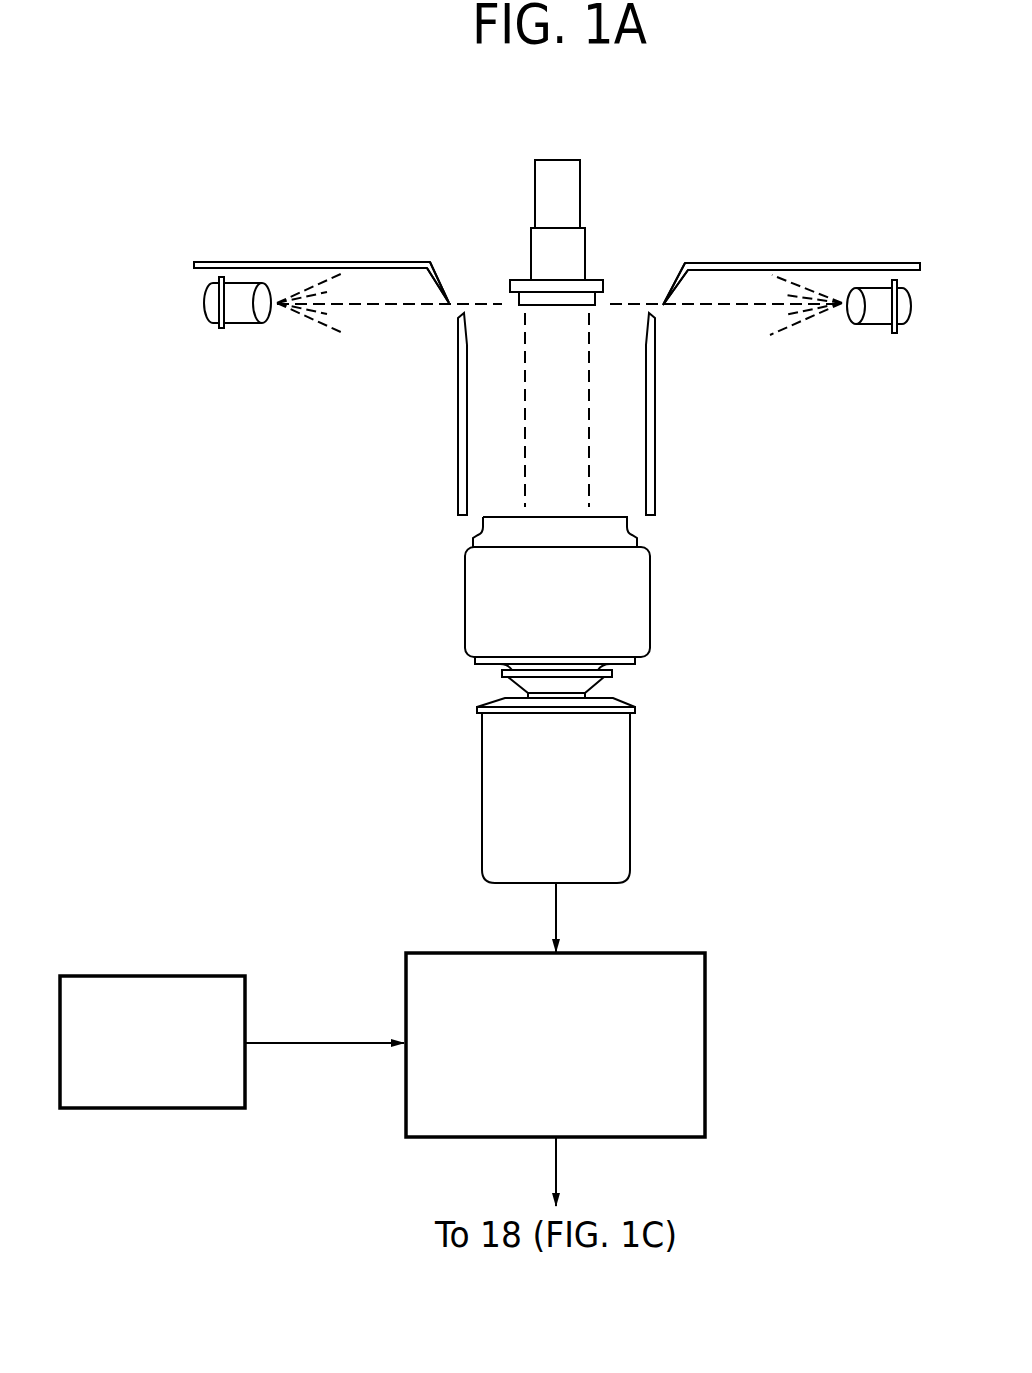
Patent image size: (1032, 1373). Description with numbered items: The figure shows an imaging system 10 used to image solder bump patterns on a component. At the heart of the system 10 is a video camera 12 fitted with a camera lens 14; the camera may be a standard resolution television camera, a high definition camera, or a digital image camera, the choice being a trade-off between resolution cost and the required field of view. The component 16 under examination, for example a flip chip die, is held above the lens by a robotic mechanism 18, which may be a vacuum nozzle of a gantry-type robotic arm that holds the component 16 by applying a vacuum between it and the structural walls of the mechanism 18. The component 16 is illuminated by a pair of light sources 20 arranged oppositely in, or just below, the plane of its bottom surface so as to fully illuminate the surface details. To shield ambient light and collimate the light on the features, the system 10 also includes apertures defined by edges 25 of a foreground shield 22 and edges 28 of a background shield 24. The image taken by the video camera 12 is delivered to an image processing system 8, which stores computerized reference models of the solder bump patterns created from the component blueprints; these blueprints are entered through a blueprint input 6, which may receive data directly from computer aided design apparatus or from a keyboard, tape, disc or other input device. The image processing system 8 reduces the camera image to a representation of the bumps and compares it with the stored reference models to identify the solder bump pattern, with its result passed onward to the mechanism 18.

The blueprint input 6 is at (245, 1092).
The image processing system 8 is at (705, 1101).
The imaging system 10 is at (693, 545).
The video camera 12 is at (645, 793).
The camera lens 14 is at (452, 612).
The component 16 is at (607, 302).
The robotic mechanism 18 is at (520, 248).
The light source 20 is at (241, 330).
The foreground shield 22 is at (663, 468).
The background shield 24 is at (747, 255).
The edge of foreground shield 25 is at (449, 303).
The edge of background shield 28 is at (465, 314).